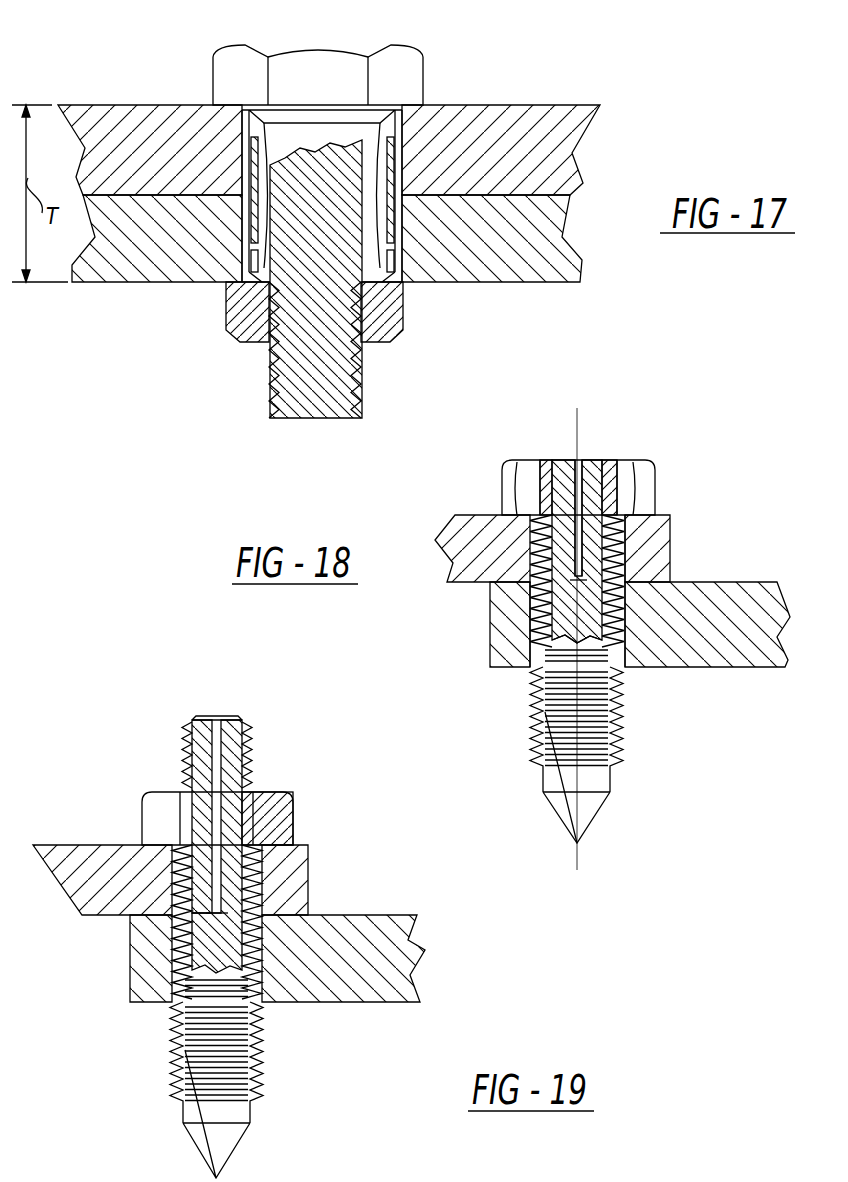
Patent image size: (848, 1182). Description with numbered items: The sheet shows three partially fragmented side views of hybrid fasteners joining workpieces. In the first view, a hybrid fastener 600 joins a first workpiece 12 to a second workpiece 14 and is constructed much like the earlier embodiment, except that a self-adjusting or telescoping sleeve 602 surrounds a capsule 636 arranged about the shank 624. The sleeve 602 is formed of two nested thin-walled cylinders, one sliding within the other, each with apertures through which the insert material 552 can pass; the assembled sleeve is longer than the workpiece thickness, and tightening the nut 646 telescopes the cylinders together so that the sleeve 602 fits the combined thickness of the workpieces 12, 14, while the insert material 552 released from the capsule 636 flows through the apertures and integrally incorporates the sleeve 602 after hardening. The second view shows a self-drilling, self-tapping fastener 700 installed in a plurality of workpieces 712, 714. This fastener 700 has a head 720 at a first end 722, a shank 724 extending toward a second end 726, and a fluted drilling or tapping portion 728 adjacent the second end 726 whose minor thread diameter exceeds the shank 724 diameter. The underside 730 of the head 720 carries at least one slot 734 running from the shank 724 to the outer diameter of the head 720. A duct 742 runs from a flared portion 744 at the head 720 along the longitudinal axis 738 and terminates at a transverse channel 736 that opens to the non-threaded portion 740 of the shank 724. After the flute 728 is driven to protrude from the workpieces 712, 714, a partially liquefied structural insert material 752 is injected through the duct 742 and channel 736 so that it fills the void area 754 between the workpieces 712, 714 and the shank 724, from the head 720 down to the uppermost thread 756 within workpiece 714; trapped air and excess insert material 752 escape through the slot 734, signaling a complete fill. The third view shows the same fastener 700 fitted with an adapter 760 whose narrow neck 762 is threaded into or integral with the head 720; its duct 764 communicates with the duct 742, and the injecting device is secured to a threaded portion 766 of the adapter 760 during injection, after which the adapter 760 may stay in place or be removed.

In FIG. 17, the first workpiece 12 is at (556, 147).
In FIG. 17, the second workpiece 14 is at (558, 250).
In FIG. 17, the hybrid fastener 600 is at (184, 56).
In FIG. 17, the telescoping sleeve 602 is at (403, 165).
In FIG. 17, the shank 624 is at (303, 208).
In FIG. 17, the insert material 552 is at (246, 262).
In FIG. 17, the capsule 636 is at (420, 276).
In FIG. 17, the nut 646 is at (403, 313).
In FIG. 19, the fastener 700 is at (786, 453).
In FIG. 18, the fastener 700 is at (96, 791).
In FIG. 19, the workpiece 712 is at (650, 547).
In FIG. 19, the workpiece 714 is at (737, 653).
In FIG. 19, the head 720 is at (650, 478).
In FIG. 18, the head 720 is at (280, 835).
In FIG. 19, the first end 722 is at (475, 490).
In FIG. 19, the shank 724 is at (593, 545).
In FIG. 19, the second end 726 is at (637, 748).
In FIG. 19, the fluted drilling/tapping portion 728 is at (613, 770).
In FIG. 19, the underside of head 730 is at (527, 525).
In FIG. 19, the slot 734 is at (627, 525).
In FIG. 19, the channel 736 is at (622, 588).
In FIG. 19, the longitudinal axis 738 is at (577, 422).
In FIG. 19, the non-threaded portion 740 is at (548, 613).
In FIG. 19, the duct 742 is at (586, 467).
In FIG. 18, the duct 742 is at (233, 880).
In FIG. 19, the flared portion 744 is at (574, 458).
In FIG. 19, the structural insert material 752 is at (536, 642).
In FIG. 18, the structural insert material 752 is at (222, 810).
In FIG. 19, the void area 754 is at (625, 615).
In FIG. 19, the uppermost thread 756 is at (617, 633).
In FIG. 18, the adapter 760 is at (253, 757).
In FIG. 18, the narrow neck 762 is at (193, 783).
In FIG. 18, the duct 764 is at (228, 737).
In FIG. 18, the threaded portion 766 is at (183, 737).